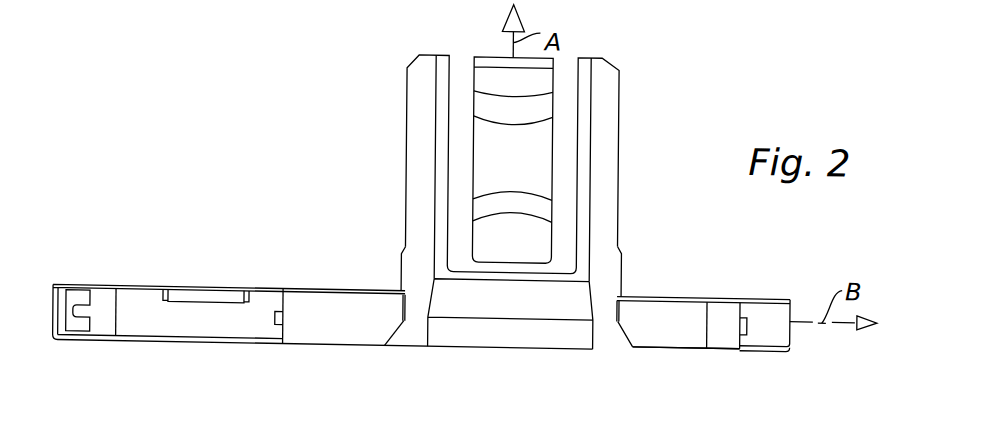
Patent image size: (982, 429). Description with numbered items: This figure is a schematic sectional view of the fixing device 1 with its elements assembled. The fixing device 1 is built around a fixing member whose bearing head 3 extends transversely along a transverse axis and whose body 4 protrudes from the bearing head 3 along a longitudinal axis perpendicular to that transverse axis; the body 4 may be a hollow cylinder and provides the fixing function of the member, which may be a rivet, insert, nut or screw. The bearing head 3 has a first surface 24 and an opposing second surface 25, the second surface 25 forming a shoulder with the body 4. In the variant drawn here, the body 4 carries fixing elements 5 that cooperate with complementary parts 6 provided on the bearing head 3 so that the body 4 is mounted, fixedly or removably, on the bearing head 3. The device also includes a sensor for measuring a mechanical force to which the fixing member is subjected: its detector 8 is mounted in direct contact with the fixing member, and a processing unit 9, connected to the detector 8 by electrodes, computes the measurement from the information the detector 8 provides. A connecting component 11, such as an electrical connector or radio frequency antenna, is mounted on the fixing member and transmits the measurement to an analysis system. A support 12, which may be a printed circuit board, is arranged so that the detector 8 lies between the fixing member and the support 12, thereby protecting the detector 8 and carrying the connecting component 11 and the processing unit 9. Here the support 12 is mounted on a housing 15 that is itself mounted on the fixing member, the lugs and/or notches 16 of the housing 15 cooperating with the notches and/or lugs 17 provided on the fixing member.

The fixing device 1 is at (229, 205).
The bearing head 3 is at (322, 319).
The body 4 is at (601, 128).
The fixing elements 5 is at (398, 335).
The complementary parts 6 is at (628, 333).
The detector 8 is at (363, 296).
The processing unit 9 is at (202, 299).
The connecting component 11 is at (107, 308).
The support 12 is at (260, 290).
The housing 15 is at (168, 320).
The lugs and/or notches 16 is at (747, 321).
The notches and/or lugs 17 is at (280, 319).
The first surface 24 is at (652, 351).
The second surface 25 is at (710, 298).